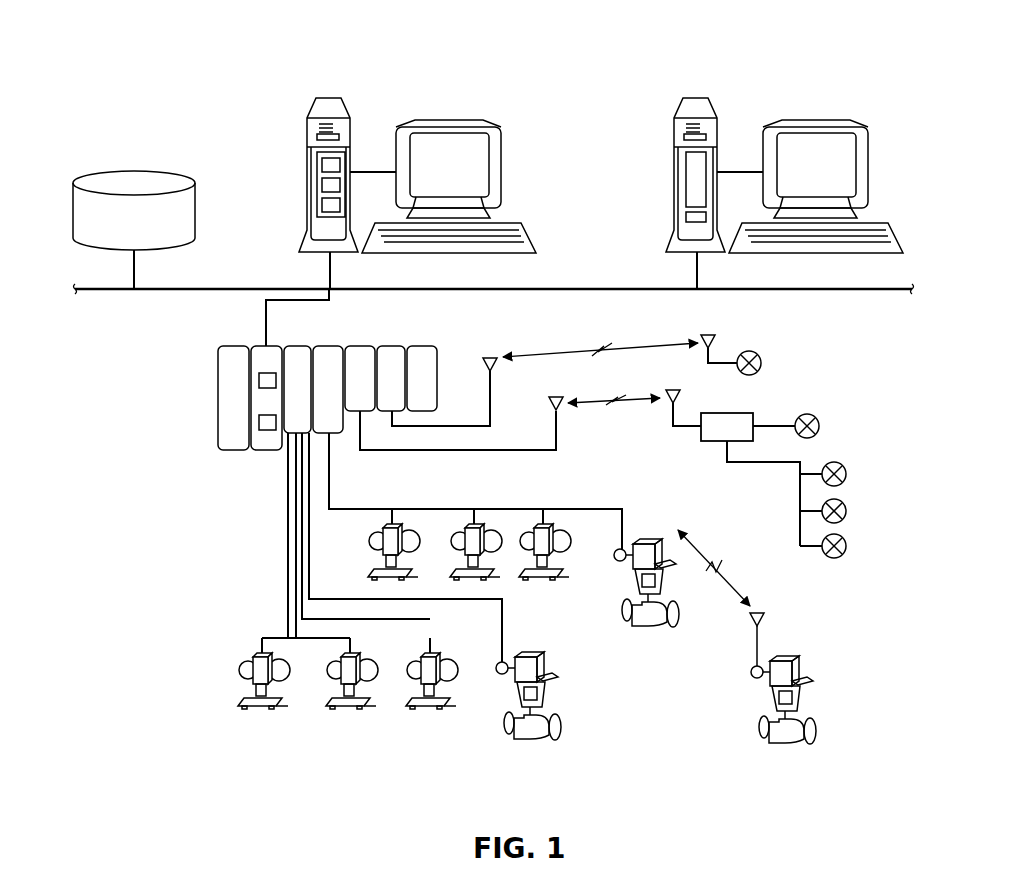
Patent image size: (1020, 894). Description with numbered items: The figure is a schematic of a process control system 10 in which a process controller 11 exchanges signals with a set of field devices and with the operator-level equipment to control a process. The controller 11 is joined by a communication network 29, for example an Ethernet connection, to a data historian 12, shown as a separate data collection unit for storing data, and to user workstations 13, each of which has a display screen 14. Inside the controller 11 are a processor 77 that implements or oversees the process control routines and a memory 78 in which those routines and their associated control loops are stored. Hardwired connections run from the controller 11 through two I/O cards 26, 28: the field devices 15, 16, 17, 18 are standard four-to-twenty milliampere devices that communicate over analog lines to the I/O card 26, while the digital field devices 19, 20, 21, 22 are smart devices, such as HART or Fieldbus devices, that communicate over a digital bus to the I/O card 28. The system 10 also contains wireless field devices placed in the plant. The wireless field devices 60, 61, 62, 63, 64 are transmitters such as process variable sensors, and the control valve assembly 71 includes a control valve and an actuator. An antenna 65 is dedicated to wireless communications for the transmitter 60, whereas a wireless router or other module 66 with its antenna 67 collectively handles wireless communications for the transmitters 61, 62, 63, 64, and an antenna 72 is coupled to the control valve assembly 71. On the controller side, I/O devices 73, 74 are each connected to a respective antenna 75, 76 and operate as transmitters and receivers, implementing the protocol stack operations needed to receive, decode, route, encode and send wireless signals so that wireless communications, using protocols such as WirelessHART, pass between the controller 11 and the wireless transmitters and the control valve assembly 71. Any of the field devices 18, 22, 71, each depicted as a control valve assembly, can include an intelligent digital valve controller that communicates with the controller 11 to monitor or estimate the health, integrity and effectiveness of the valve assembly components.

The process control system 10 is at (628, 60).
The process controller 11 is at (259, 351).
The data historian 12 is at (197, 216).
The user workstation 13 is at (306, 133).
The display screen 14 is at (503, 156).
The field device 15 is at (255, 688).
The field device 16 is at (344, 688).
The field device 17 is at (425, 688).
The field device 18 is at (522, 686).
The digital field device 19 is at (400, 528).
The digital field device 20 is at (478, 528).
The digital field device 21 is at (548, 528).
The digital field device 22 is at (645, 538).
The input/output card 26 is at (297, 358).
The input/output card 28 is at (324, 358).
The communication network 29 is at (195, 292).
The wireless field device 60 is at (762, 363).
The wireless field device 61 is at (820, 427).
The wireless field device 62 is at (847, 474).
The wireless field device 63 is at (847, 511).
The wireless field device 64 is at (847, 546).
The antenna 65 is at (716, 340).
The wireless router 66 is at (710, 443).
The antenna 67 is at (682, 407).
The control valve assembly 71 is at (777, 689).
The antenna 72 is at (765, 617).
The I/O device 73 is at (361, 358).
The I/O device 74 is at (393, 358).
The antenna 75 is at (555, 429).
The antenna 76 is at (493, 385).
The processor 77 is at (257, 380).
The memory 78 is at (257, 421).